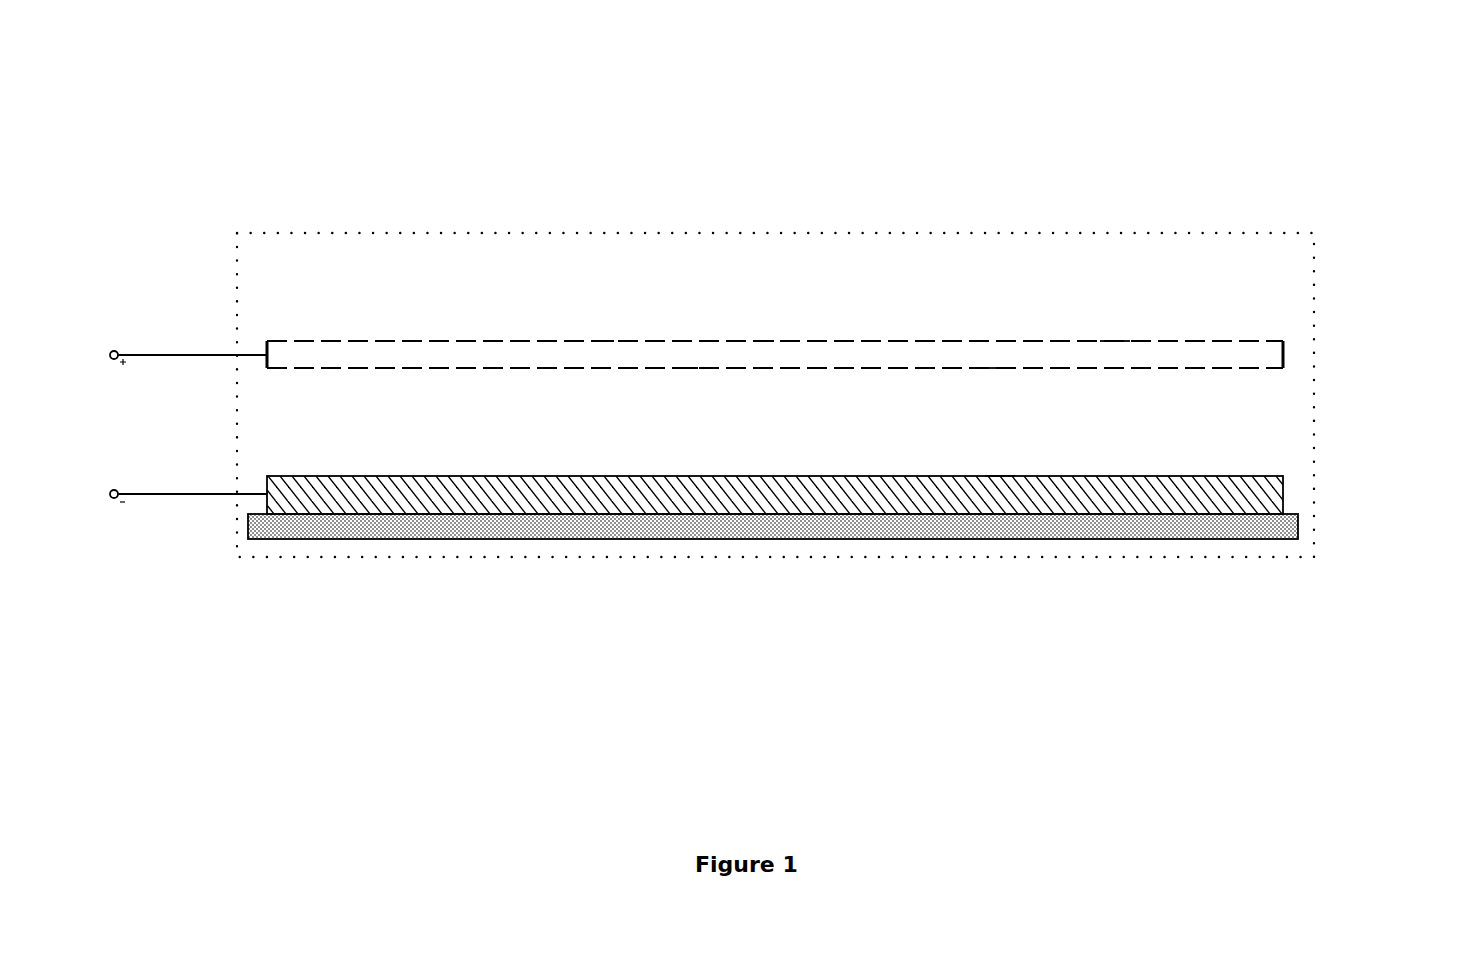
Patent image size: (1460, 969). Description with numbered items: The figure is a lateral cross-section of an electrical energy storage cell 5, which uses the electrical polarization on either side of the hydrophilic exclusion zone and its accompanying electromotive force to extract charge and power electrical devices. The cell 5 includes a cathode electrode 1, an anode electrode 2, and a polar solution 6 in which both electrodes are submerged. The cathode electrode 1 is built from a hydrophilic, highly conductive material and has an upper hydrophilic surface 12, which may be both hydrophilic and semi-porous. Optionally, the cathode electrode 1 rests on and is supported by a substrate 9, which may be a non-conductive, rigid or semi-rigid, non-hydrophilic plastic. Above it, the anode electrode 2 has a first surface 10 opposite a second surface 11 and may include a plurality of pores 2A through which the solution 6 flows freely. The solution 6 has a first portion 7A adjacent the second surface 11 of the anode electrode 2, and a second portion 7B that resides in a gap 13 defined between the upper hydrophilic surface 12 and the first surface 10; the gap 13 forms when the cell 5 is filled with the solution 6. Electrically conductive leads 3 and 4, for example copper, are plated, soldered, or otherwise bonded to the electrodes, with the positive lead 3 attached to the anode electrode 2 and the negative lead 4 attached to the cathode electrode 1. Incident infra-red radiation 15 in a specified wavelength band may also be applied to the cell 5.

The cathode electrode 1 is at (1284, 494).
The anode electrode 2 is at (1284, 355).
The pores 2A is at (612, 341).
The lead 3 is at (197, 355).
The lead 4 is at (210, 494).
The electrical energy storage cell 5 is at (718, 122).
The polar solution 6 is at (781, 295).
The first portion 7A is at (340, 300).
The second portion 7B is at (340, 435).
The substrate 9 is at (890, 539).
The first surface 10 is at (990, 368).
The second surface 11 is at (1120, 341).
The upper hydrophilic surface 12 is at (998, 476).
The gap 13 is at (283, 420).
The infra-red radiation 15 is at (1437, 93).